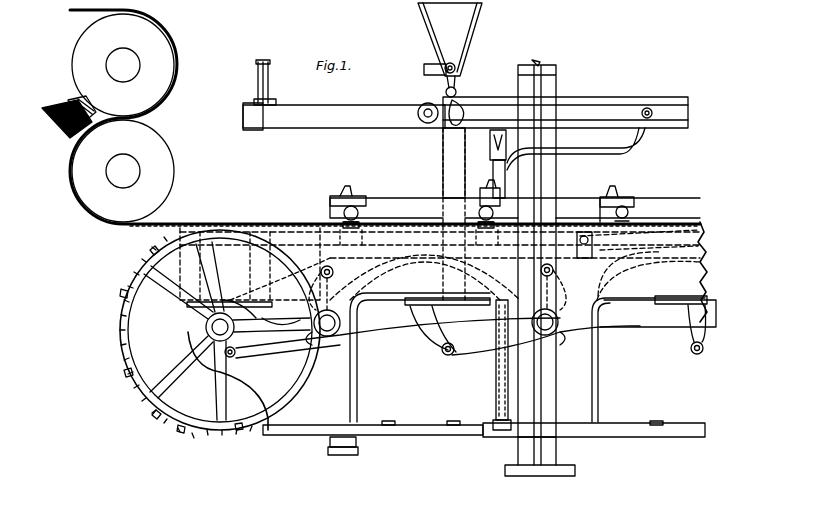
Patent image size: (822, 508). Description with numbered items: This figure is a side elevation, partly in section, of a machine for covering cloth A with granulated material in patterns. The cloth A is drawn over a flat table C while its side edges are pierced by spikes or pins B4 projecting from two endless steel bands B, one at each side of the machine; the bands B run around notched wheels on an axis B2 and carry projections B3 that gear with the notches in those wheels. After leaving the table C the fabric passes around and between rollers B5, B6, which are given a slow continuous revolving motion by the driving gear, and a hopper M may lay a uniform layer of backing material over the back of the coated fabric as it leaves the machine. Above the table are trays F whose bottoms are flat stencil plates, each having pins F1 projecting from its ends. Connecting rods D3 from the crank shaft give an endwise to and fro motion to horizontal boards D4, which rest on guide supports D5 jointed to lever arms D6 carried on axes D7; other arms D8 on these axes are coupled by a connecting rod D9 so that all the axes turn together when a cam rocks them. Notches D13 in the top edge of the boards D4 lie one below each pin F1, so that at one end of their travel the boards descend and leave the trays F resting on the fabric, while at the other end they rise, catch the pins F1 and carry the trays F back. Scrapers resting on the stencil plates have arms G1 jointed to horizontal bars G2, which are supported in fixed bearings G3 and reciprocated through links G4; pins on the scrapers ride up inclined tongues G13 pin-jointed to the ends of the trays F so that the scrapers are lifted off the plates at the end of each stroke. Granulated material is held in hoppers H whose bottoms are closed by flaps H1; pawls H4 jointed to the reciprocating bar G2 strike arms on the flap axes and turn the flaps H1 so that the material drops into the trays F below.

The cloth A is at (166, 223).
The endless bands B is at (158, 262).
The axis B2 is at (227, 331).
The projections B3 is at (302, 226).
The spikes or pins B4 is at (122, 292).
The roller B5 is at (123, 171).
The roller B6 is at (123, 65).
The hopper M is at (60, 118).
The flat table C is at (640, 238).
The connecting rods D3 is at (639, 240).
The horizontal boards D4 is at (410, 325).
The guide supports D5 is at (492, 283).
The lever arms D6 is at (374, 344).
The axes D7 is at (334, 334).
The arms D8 is at (556, 290).
The connecting rod D9 is at (405, 264).
The notches D13 is at (425, 234).
The frames or trays F is at (515, 202).
The pins F1 is at (358, 213).
The arms G1 is at (567, 163).
The horizontal bars G2 is at (354, 150).
The fixed bearings G3 is at (268, 132).
The links G4 is at (565, 112).
The inclined tongues G13 is at (352, 198).
The hoppers H is at (466, 60).
The flaps H1 is at (478, 40).
The pawls H4 is at (466, 92).